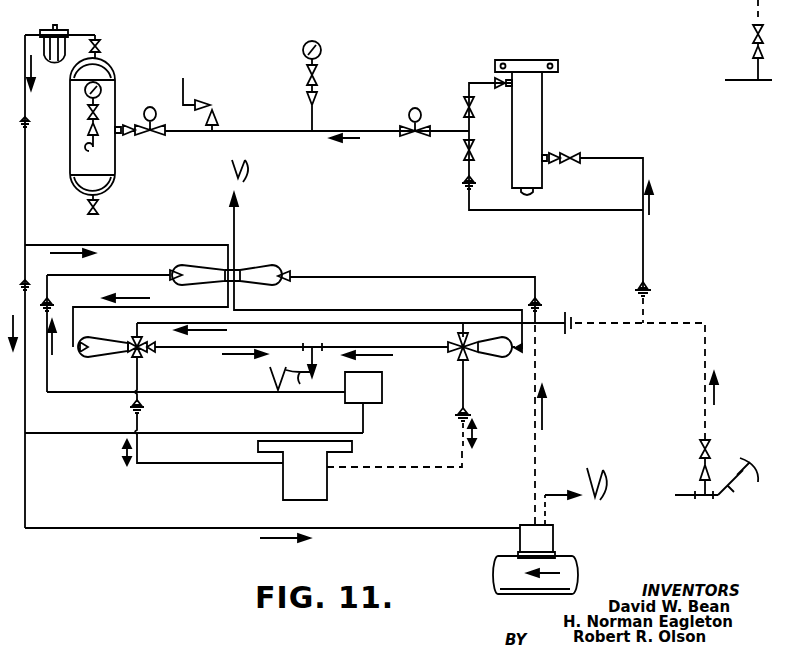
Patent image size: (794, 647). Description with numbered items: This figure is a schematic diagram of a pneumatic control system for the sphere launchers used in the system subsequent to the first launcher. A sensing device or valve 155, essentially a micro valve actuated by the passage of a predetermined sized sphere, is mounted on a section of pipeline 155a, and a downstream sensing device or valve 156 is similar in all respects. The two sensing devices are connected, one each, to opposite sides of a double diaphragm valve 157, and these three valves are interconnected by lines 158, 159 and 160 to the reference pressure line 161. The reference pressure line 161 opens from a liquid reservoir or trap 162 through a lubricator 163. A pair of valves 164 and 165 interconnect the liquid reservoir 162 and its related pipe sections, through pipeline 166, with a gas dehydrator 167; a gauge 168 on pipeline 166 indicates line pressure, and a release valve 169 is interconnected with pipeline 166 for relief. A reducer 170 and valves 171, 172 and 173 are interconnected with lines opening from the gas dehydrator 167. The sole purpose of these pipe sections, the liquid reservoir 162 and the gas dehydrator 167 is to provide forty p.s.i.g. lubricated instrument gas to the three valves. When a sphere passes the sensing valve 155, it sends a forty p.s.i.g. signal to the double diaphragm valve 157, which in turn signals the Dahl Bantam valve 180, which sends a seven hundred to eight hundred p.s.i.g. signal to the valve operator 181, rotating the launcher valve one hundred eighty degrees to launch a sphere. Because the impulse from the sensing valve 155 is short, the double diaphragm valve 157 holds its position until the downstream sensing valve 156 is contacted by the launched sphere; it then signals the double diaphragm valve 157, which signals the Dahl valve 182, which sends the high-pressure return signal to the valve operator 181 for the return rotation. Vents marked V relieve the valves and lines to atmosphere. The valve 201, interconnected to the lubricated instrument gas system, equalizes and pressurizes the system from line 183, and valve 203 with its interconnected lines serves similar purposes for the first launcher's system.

The sensing device or valve 155 is at (553, 537).
The section of pipeline 155a is at (512, 595).
The downstream sensing device or valve 156 is at (382, 383).
The double diaphragm valve 157 is at (250, 262).
The line 158 is at (97, 528).
The line 159 is at (70, 433).
The line 160 is at (148, 245).
The reference pressure line 161 is at (25, 208).
The liquid reservoir or trap 162 is at (117, 90).
The lubricator 163 is at (58, 30).
The valve 164 is at (150, 137).
The valve 165 is at (415, 140).
The pipeline 166 is at (292, 131).
The gas dehydrator 167 is at (532, 103).
The gauge 168 is at (323, 66).
The release valve 169 is at (205, 100).
The reducer 170 is at (646, 290).
The valve 171 is at (466, 152).
The valve 172 is at (465, 103).
The valve 173 is at (575, 155).
The Dahl Bantam valve 180 is at (490, 360).
The valve operator 181 is at (327, 487).
The Dahl valve 182 is at (108, 357).
The line 183 is at (705, 345).
The valve 201 is at (712, 450).
The valve 203 is at (752, 33).